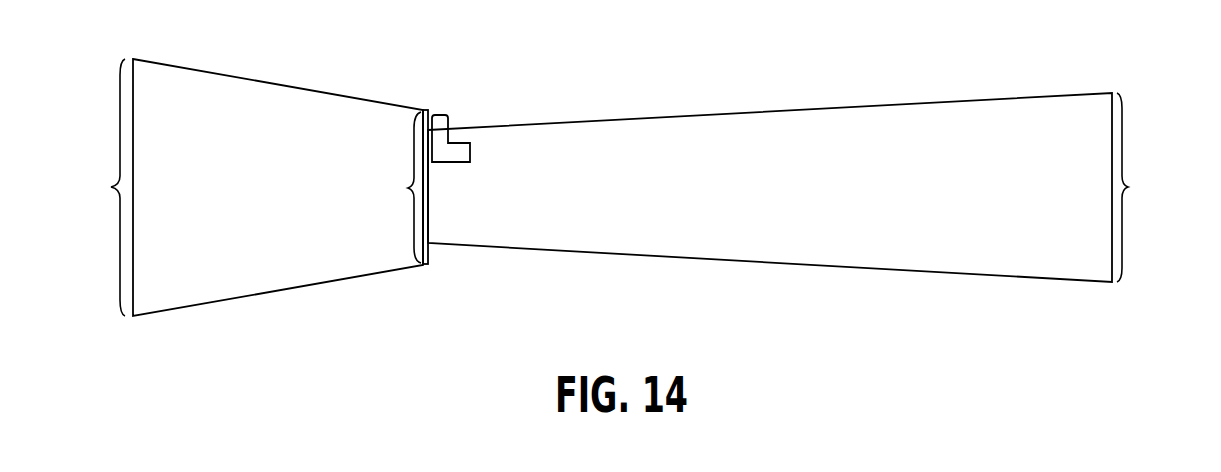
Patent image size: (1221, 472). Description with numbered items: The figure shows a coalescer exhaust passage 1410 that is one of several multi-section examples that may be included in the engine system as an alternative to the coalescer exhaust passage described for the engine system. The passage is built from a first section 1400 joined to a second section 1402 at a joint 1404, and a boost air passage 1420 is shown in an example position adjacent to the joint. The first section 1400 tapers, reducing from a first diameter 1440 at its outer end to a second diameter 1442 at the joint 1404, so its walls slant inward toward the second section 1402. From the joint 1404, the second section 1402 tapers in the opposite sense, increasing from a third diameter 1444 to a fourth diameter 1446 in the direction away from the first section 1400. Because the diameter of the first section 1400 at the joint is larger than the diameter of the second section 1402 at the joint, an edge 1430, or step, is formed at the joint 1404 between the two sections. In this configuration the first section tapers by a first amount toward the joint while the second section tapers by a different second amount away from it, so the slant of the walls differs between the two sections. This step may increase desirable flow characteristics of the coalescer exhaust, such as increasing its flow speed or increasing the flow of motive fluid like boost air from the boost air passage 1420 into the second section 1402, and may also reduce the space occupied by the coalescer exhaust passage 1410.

The first section 1400 is at (300, 200).
The second section 1402 is at (789, 200).
The joint 1404 is at (422, 208).
The coalescer exhaust passage 1410 is at (607, 60).
The boost air passage 1420 is at (450, 137).
The edge 1430 is at (428, 258).
The first diameter 1440 is at (111, 187).
The second diameter 1442 is at (408, 187).
The third diameter 1444 is at (430, 187).
The fourth diameter 1446 is at (1128, 187).